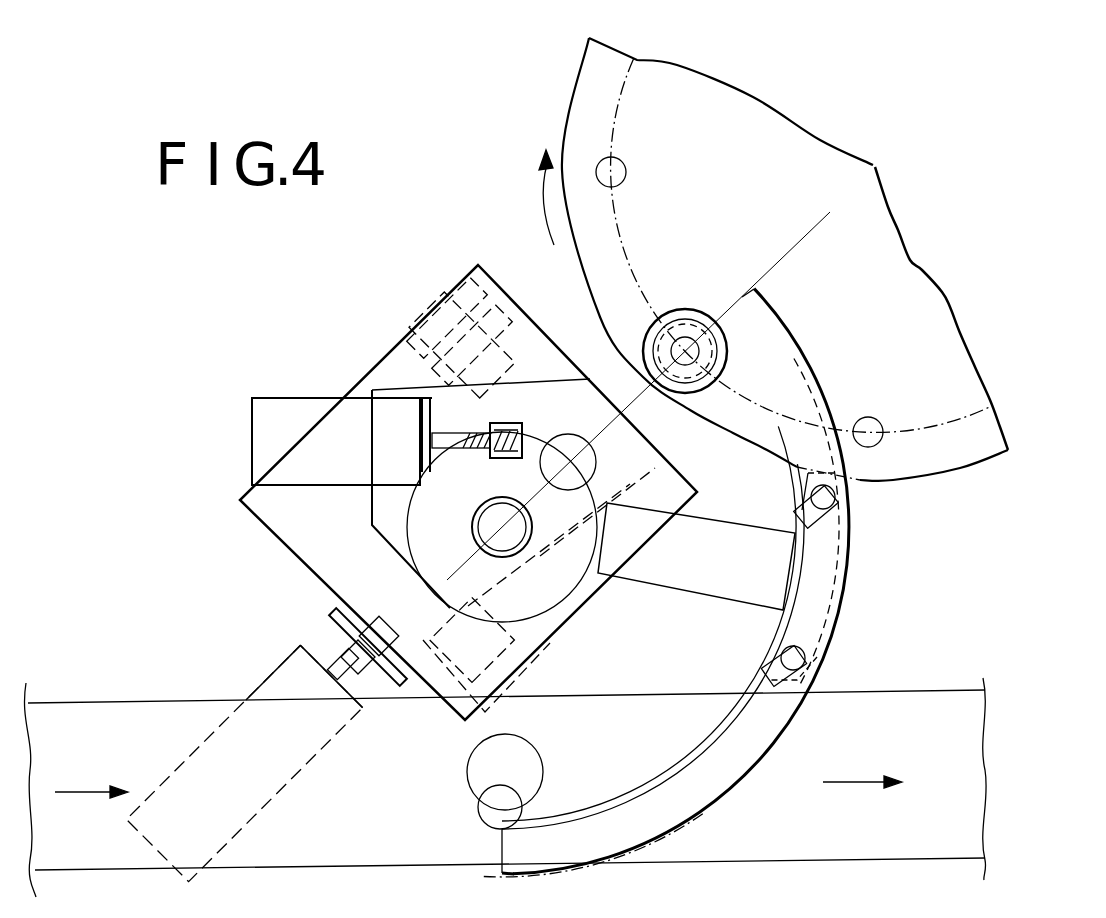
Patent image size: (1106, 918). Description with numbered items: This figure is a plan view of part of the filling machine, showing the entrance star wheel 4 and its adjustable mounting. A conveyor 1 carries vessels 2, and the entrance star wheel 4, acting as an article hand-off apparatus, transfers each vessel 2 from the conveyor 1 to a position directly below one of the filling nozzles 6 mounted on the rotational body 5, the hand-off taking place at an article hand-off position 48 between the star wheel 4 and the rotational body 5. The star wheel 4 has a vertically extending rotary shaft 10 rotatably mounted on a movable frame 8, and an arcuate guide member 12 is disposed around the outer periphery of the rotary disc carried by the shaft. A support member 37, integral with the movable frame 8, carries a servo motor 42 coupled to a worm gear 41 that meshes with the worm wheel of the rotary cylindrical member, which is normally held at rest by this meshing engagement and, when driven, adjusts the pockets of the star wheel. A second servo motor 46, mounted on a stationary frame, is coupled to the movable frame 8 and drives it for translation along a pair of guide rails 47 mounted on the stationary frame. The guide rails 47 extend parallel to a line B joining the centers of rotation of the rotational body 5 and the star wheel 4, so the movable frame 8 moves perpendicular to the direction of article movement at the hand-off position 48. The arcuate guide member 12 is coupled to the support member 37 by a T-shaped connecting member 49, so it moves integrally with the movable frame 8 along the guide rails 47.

The conveyor 1 is at (407, 861).
The vessel 2 is at (490, 800).
The entrance star wheel 4 is at (230, 495).
The rotational body 5 is at (945, 490).
The filling nozzle 6 is at (865, 418).
The movable frame 8 is at (307, 573).
The rotary shaft 10 is at (478, 531).
The arcuate guide member 12 is at (855, 556).
The support member 37 is at (393, 546).
The worm gear 41 is at (513, 424).
The servo motor 42 is at (288, 395).
The servo motor 46 is at (267, 682).
The guide rail 47 is at (428, 318).
The article hand-off position 48 is at (685, 350).
The T-shaped connecting member 49 is at (673, 592).
The line B is at (654, 396).